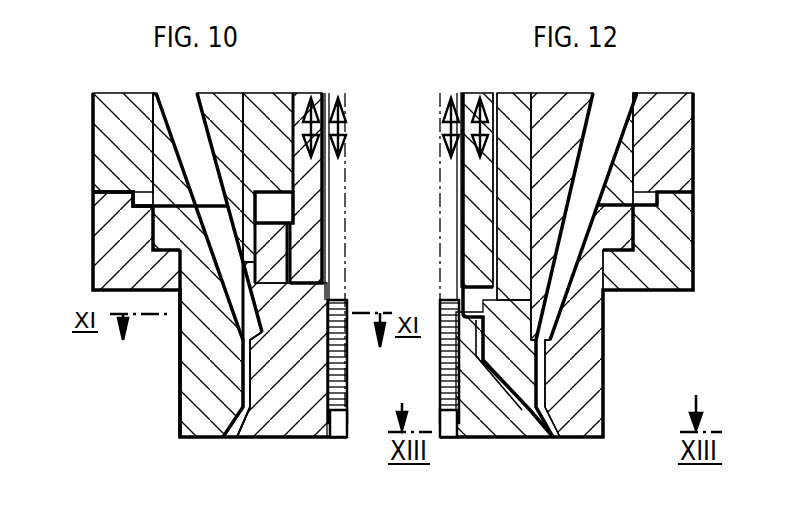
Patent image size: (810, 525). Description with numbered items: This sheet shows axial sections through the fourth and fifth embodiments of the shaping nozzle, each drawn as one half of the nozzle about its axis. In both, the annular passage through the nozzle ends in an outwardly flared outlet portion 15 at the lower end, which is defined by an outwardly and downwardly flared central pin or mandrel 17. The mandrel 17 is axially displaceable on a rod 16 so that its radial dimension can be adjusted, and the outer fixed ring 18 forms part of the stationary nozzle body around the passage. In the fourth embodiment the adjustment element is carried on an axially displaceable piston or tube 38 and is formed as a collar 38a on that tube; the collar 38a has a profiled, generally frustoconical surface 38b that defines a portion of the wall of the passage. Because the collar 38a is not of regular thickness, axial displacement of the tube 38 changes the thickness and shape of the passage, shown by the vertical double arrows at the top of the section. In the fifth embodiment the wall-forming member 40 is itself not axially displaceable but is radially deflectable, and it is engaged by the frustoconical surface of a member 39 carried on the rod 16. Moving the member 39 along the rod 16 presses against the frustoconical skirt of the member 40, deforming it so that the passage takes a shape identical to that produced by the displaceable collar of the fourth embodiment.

In FIG. 10, the outwardly flared outlet portion 15 is at (245, 415).
In FIG. 10, the rod 16 is at (335, 437).
In FIG. 12, the rod 16 is at (443, 437).
In FIG. 10, the central pin or mandrel 17 is at (262, 437).
In FIG. 10, the outer fixed ring 18 is at (190, 310).
In FIG. 10, the axially displaceable piston or tube 38 is at (260, 159).
In FIG. 10, the collar 38a is at (250, 231).
In FIG. 10, the profiled generally frustoconical surface 38b is at (245, 330).
In FIG. 12, the member with frustoconical surface 39 is at (508, 437).
In FIG. 12, the radially deflectable member 40 is at (540, 415).